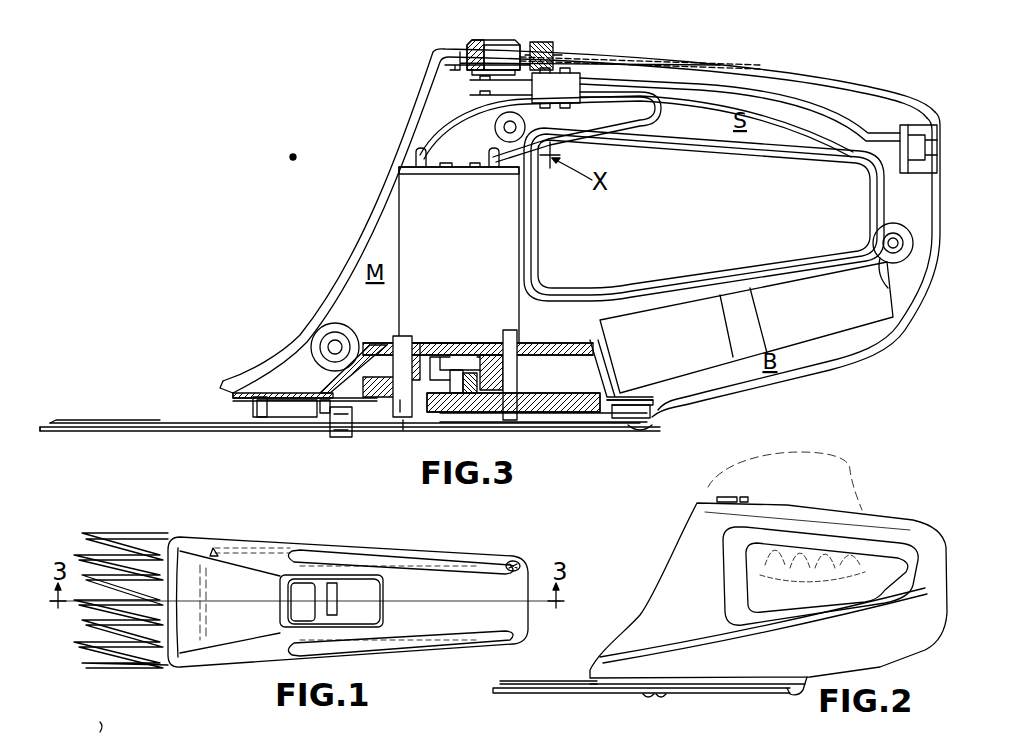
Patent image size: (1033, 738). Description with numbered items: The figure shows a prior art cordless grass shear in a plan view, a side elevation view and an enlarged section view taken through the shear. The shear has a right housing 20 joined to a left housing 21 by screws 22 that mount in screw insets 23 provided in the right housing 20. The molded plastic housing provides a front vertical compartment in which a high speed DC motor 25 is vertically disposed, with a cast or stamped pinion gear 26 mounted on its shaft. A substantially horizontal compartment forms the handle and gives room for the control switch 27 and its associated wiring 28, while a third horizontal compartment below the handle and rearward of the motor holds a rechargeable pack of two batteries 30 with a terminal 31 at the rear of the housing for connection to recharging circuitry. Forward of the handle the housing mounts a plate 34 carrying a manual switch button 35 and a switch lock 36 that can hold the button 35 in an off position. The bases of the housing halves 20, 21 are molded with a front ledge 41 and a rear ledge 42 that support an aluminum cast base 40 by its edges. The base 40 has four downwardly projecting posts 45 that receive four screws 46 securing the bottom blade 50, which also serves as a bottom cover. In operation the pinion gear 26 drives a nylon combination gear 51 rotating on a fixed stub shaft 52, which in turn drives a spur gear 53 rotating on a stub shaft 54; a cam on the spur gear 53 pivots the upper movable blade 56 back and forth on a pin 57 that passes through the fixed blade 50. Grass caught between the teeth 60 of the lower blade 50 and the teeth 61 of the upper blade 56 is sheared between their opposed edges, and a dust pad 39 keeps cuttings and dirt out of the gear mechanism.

In FIG. 1, the right housing 20 is at (348, 602).
In FIG. 2, the right housing 20 is at (820, 576).
In FIG. 1, the left housing 21 is at (367, 603).
In FIG. 1, the screws 22 is at (520, 562).
In FIG. 2, the screws 22 is at (768, 599).
In FIG. 3, the screw insets 23 is at (503, 132).
In FIG. 1, the screw insets 23 is at (216, 547).
In FIG. 3, the DC motor 25 is at (495, 214).
In FIG. 3, the pinion gear 26 is at (460, 370).
In FIG. 3, the control switch 27 is at (525, 88).
In FIG. 3, the wiring 28 is at (652, 124).
In FIG. 3, the batteries 30 is at (800, 285).
In FIG. 3, the terminal 31 is at (930, 118).
In FIG. 3, the plate 34 is at (600, 58).
In FIG. 1, the plate 34 is at (365, 586).
In FIG. 3, the manual switch button 35 is at (490, 44).
In FIG. 1, the manual switch button 35 is at (300, 590).
In FIG. 2, the manual switch button 35 is at (722, 497).
In FIG. 3, the switch lock 36 is at (546, 44).
In FIG. 1, the switch lock 36 is at (332, 615).
In FIG. 2, the switch lock 36 is at (752, 496).
In FIG. 3, the dust pad 39 is at (263, 420).
In FIG. 3, the base 40 is at (330, 383).
In FIG. 3, the front ledge 41 is at (240, 394).
In FIG. 3, the rear ledge 42 is at (660, 410).
In FIG. 3, the posts 45 is at (322, 416).
In FIG. 3, the screws 46 is at (648, 426).
In FIG. 3, the bottom blade 50 is at (218, 433).
In FIG. 1, the bottom blade 50 is at (137, 538).
In FIG. 2, the bottom blade 50 is at (590, 694).
In FIG. 3, the combination gear 51 is at (395, 414).
In FIG. 3, the stub shaft 52 is at (403, 414).
In FIG. 3, the spur gear 53 is at (540, 422).
In FIG. 3, the stub shaft 54 is at (517, 352).
In FIG. 3, the upper movable blade 56 is at (190, 423).
In FIG. 1, the upper movable blade 56 is at (146, 642).
In FIG. 2, the upper movable blade 56 is at (590, 681).
In FIG. 3, the pin 57 is at (345, 440).
In FIG. 2, the pin 57 is at (666, 695).
In FIG. 3, the teeth 60 is at (42, 432).
In FIG. 3, the teeth 61 is at (55, 421).
In FIG. 1, the teeth 61 is at (85, 722).